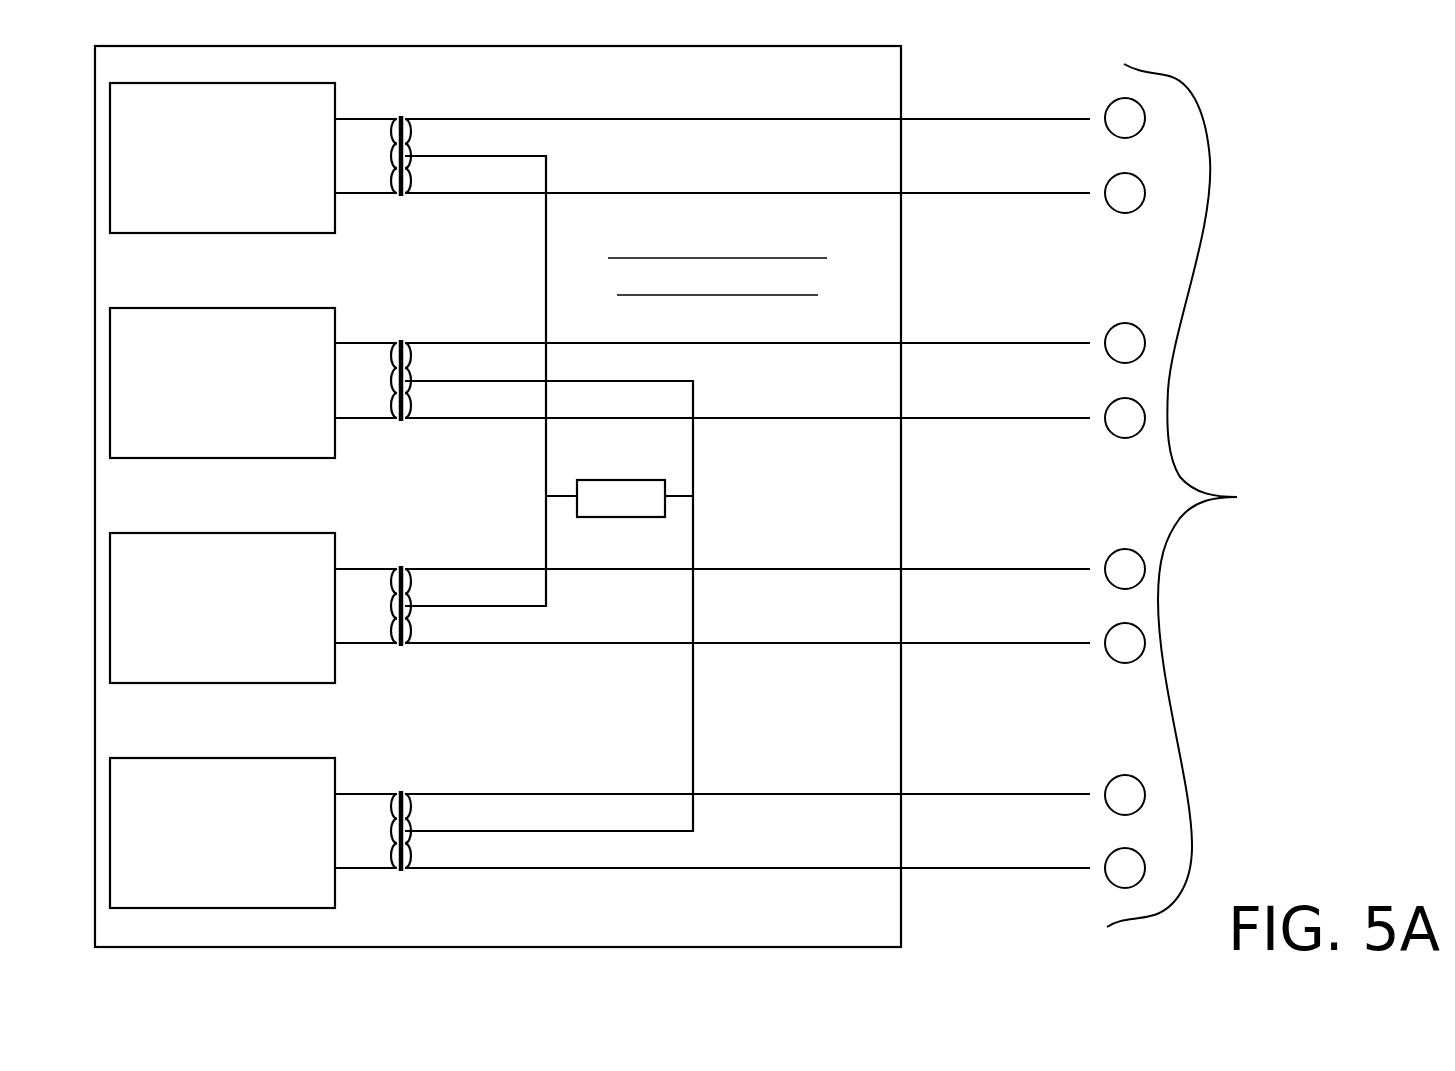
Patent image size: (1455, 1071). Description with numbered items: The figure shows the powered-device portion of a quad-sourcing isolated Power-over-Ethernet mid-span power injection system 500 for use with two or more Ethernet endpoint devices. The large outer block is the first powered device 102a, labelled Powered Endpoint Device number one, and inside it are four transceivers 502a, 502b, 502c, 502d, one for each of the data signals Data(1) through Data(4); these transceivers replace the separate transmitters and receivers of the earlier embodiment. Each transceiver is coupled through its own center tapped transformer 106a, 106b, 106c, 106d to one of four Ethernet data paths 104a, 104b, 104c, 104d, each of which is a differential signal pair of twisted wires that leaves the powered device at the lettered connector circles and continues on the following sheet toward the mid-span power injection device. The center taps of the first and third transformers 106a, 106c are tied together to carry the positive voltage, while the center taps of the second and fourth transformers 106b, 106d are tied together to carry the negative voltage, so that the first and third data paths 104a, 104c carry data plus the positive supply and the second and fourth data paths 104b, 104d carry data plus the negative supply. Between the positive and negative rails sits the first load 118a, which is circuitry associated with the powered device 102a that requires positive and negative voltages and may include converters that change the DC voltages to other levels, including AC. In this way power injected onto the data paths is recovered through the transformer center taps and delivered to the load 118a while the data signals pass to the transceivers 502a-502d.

The quad-sourcing isolated PoE mid-span power injection system 500 is at (748, 496).
The first powered device 102a is at (673, 98).
The first Ethernet data path 104a is at (1023, 103).
The second Ethernet data path 104b is at (1028, 328).
The third Ethernet data path 104c is at (1032, 557).
The fourth Ethernet data path 104d is at (1032, 779).
The first center tapped transformer 106a is at (380, 152).
The second center tapped transformer 106b is at (380, 370).
The third center tapped transformer 106c is at (380, 600).
The fourth center tapped transformer 106d is at (380, 826).
The first load 118a is at (592, 510).
The first transceiver 502a is at (193, 208).
The second transceiver 502b is at (193, 433).
The third transceiver 502c is at (193, 658).
The fourth transceiver 502d is at (193, 883).